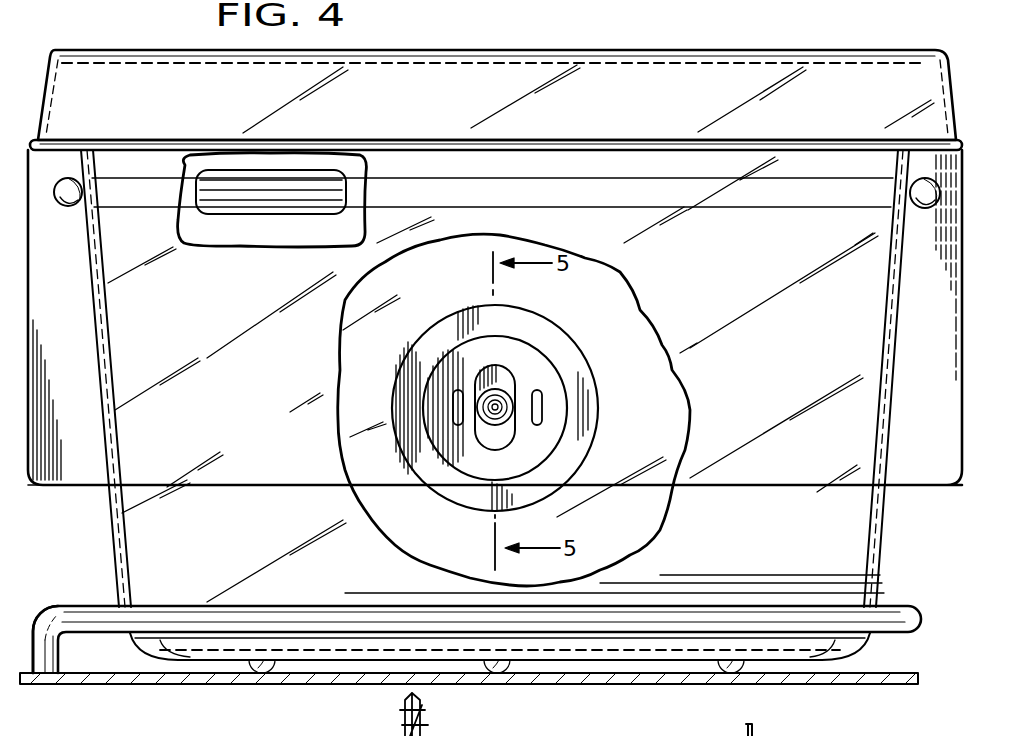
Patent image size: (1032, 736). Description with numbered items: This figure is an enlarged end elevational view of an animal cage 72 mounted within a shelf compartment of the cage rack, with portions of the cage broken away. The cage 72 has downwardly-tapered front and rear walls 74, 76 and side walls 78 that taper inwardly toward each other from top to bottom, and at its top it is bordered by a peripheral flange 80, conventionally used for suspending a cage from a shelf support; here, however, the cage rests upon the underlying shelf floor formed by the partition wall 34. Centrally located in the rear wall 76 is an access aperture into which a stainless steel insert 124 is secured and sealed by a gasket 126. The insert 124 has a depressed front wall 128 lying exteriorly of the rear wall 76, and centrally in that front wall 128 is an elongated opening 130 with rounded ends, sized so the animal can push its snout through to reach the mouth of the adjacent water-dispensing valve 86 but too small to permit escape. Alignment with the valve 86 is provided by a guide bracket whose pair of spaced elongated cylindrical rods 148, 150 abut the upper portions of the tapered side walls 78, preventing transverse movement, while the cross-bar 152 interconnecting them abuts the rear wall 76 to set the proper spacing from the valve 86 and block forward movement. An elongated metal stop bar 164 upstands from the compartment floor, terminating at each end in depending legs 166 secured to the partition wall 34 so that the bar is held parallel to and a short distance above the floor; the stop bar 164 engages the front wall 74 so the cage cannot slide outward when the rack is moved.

The partition wall 34 is at (177, 682).
The cage 72 is at (497, 70).
The front wall 74 is at (848, 430).
The rear wall 76 is at (666, 420).
The side walls 78 is at (100, 372).
The peripheral flange 80 is at (571, 87).
The water-dispensing valve 86 is at (512, 398).
The insert 124 is at (410, 352).
The gasket 126 is at (549, 714).
The depressed front wall 128 is at (543, 440).
The elongated opening 130 is at (512, 375).
The cylindrical rod 148 is at (68, 206).
The cylindrical rod 150 is at (922, 208).
The cross-bar 152 is at (270, 195).
The stop bar 164 is at (332, 612).
The depending legs 166 is at (35, 657).